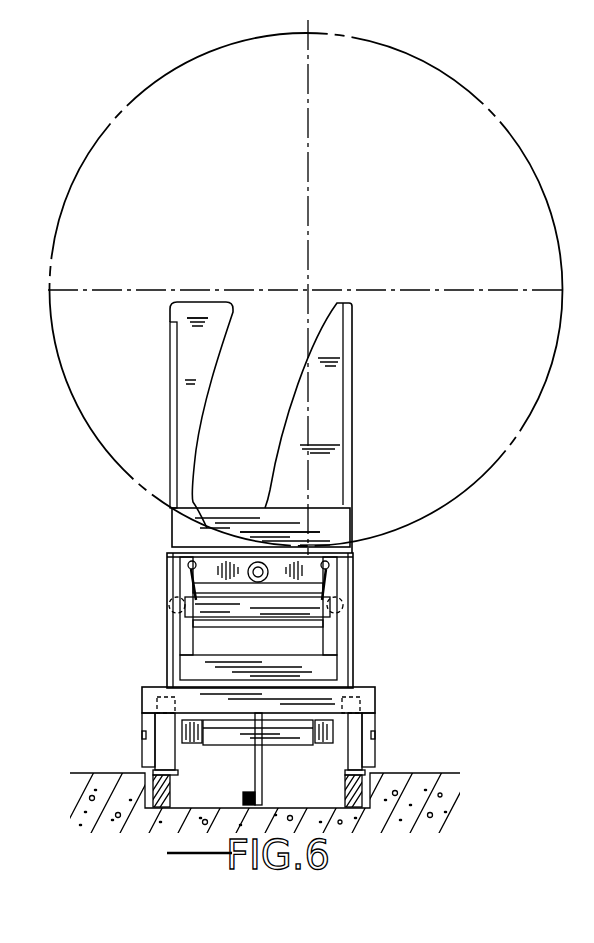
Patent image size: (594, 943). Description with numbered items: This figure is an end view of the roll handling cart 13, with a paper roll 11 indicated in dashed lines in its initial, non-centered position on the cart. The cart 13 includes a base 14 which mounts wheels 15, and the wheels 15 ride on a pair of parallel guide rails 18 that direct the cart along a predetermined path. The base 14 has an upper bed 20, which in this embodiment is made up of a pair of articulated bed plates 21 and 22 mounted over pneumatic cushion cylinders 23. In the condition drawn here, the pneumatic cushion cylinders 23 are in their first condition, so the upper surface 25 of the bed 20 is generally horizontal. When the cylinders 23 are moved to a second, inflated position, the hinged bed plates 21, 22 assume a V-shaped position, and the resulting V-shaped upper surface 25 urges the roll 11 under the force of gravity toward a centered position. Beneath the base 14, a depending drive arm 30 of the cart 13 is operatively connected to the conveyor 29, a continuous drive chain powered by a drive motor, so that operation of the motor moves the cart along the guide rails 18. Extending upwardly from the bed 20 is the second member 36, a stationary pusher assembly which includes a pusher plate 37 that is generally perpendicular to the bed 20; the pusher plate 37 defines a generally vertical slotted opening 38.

The paper roll 11 is at (508, 125).
The roll handling cart 13 is at (355, 611).
The base 14 is at (362, 688).
The wheels 15 is at (142, 770).
The guide rails 18 is at (176, 798).
The bed 20 is at (318, 548).
The bed plate 21 is at (281, 548).
The bed plate 22 is at (203, 537).
The pneumatic cushion cylinders 23 is at (228, 614).
The upper surface 25 is at (258, 562).
The conveyor 29 is at (243, 792).
The drive arm 30 is at (262, 780).
The second member 36 is at (353, 365).
The pusher plate 37 is at (203, 300).
The slotted opening 38 is at (216, 358).